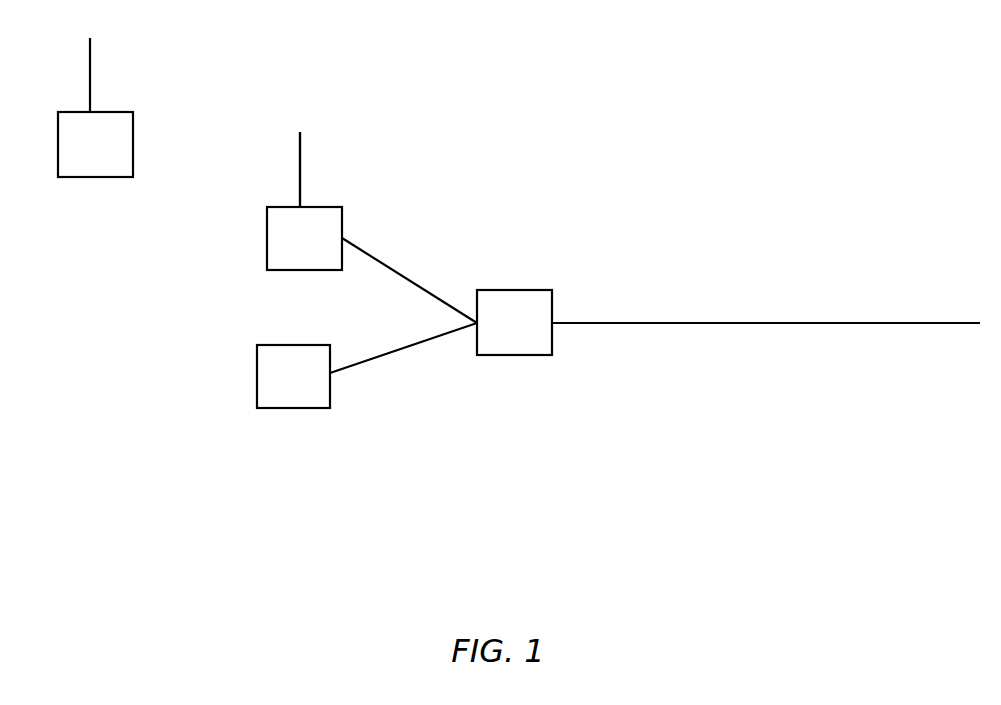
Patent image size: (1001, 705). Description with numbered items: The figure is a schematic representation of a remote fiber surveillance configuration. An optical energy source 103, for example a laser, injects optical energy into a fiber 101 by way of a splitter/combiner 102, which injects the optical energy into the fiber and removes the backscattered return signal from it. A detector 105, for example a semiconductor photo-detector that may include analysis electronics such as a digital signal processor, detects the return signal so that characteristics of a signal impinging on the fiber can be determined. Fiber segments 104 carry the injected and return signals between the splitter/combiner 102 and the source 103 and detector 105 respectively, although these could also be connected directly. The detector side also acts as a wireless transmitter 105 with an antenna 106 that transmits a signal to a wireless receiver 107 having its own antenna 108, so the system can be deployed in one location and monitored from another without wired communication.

The fiber 101 is at (750, 323).
The splitter/combiner 102 is at (540, 355).
The optical energy source 103 is at (285, 408).
The fiber segments 104 is at (403, 270).
The detector 105 is at (322, 207).
The antenna 106 is at (298, 169).
The wireless receiver 107 is at (133, 142).
The antenna 108 is at (90, 63).